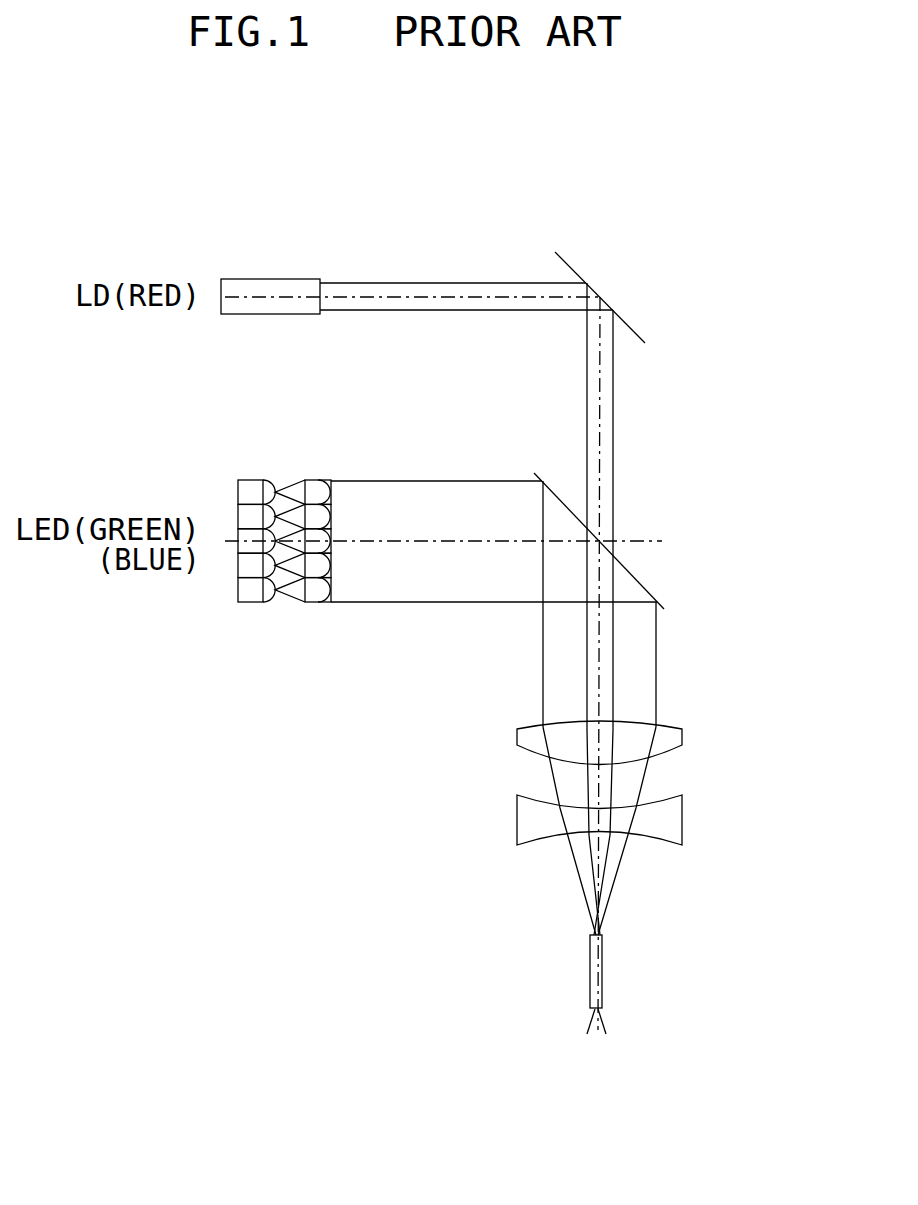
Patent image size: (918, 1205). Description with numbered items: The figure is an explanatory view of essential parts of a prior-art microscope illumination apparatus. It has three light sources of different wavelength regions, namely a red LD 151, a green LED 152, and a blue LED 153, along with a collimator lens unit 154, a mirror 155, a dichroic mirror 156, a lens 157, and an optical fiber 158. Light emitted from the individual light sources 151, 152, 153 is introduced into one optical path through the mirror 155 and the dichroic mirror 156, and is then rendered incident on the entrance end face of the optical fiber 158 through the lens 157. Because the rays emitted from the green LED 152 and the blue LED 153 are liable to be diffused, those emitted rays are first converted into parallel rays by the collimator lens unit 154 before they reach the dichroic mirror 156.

The red LD 151 is at (268, 283).
The green LED 152 is at (246, 497).
The blue LED 153 is at (248, 480).
The collimator lens unit 154 is at (318, 480).
The mirror 155 is at (630, 327).
The dichroic mirror 156 is at (628, 568).
The lens 157 is at (710, 705).
The optical fiber 158 is at (602, 972).